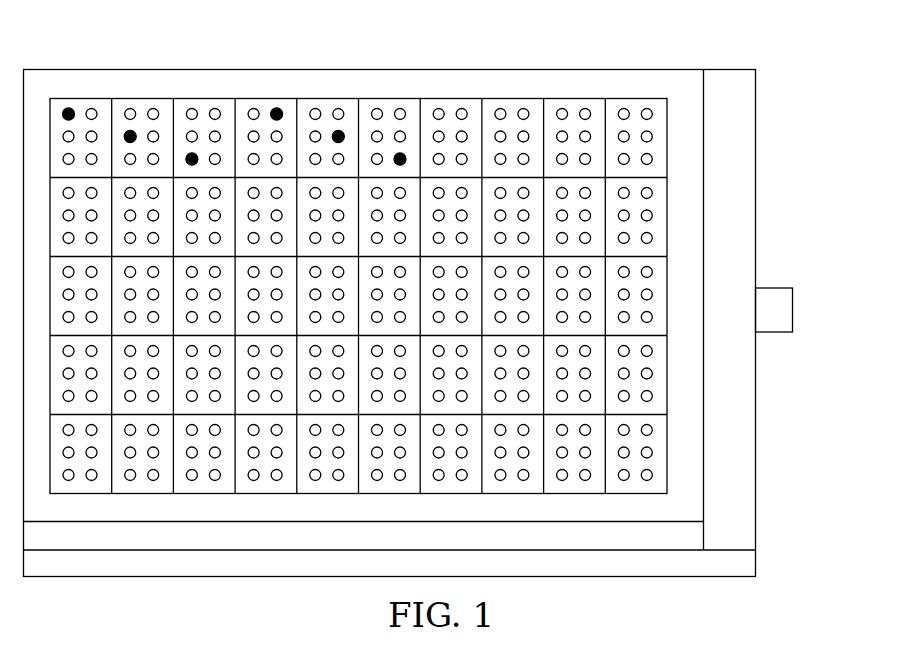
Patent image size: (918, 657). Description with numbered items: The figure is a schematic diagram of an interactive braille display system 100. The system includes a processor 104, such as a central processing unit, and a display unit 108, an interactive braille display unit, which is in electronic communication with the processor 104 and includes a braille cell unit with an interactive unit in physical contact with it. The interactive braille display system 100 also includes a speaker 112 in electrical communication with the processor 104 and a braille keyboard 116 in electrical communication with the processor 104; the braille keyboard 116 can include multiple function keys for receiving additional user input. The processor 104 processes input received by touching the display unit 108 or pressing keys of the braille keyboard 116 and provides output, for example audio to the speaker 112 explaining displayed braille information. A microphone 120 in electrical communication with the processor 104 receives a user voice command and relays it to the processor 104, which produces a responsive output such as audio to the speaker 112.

The interactive braille display system 100 is at (112, 50).
The processor 104 is at (390, 563).
The display unit 108 is at (358, 284).
The speaker 112 is at (726, 310).
The braille keyboard 116 is at (364, 536).
The microphone 120 is at (792, 303).